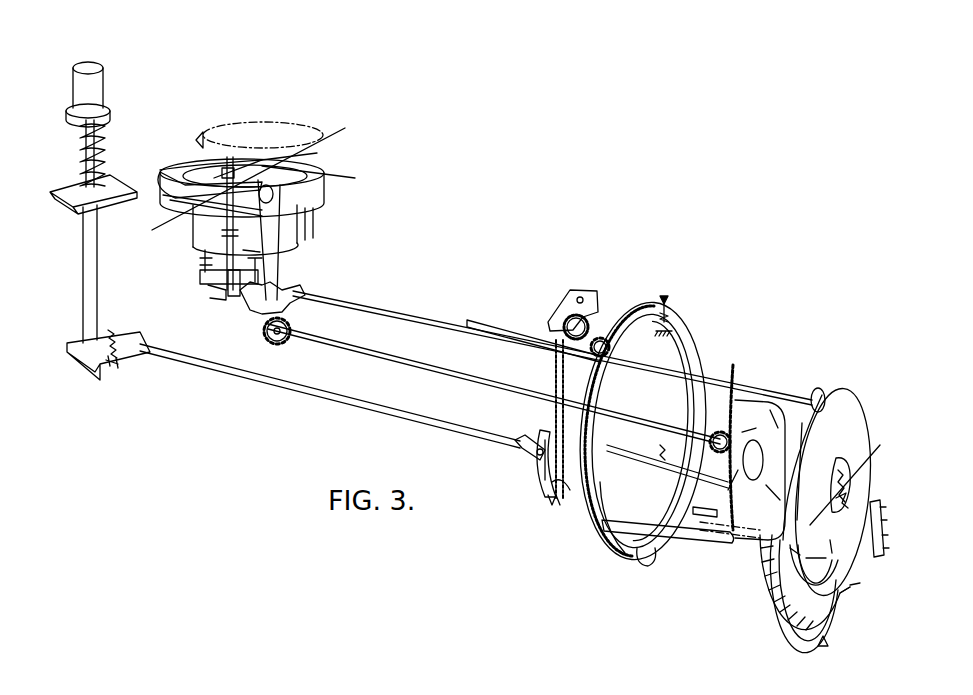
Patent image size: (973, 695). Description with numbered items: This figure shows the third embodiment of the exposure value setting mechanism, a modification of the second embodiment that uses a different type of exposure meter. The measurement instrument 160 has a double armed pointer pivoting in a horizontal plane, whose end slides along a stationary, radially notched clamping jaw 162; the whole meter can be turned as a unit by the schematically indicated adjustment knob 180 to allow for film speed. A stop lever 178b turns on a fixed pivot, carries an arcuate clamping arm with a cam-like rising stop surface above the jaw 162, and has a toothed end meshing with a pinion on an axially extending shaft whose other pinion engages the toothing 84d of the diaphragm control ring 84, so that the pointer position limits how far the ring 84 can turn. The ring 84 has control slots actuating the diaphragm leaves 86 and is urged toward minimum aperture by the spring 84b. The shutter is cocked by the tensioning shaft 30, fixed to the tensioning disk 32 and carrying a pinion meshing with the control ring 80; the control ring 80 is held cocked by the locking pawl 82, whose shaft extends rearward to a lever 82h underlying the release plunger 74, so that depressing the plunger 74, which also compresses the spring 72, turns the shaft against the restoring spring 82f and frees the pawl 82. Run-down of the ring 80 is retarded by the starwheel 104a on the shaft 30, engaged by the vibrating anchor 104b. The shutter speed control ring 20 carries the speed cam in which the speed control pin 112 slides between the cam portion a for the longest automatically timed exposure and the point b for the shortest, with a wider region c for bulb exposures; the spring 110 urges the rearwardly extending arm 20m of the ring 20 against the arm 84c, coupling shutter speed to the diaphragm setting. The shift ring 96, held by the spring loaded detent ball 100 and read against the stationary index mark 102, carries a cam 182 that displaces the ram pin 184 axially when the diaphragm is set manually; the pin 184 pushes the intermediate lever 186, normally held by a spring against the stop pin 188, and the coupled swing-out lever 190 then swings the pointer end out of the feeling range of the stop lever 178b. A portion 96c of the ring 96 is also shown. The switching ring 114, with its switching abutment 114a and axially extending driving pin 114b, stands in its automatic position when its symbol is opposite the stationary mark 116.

The release plunger 74 is at (104, 82).
The spring 72 is at (80, 150).
The lever 82h is at (132, 358).
The restoring spring 82f is at (100, 340).
The adjustment knob 180 is at (262, 118).
The measurement instrument 160 is at (320, 232).
The stationary clamping jaw 162 is at (168, 204).
The stop lever 178b is at (280, 208).
The swing-out lever 190 is at (222, 232).
The intermediate lever 186 is at (204, 283).
The stop pin 188 is at (215, 300).
The ram pin 184 is at (395, 318).
The tensioning shaft 30 is at (500, 320).
The vibrating pad or anchor 104b is at (583, 291).
The starwheel 104a is at (590, 318).
The spring loaded detent ball 100 is at (675, 318).
The stationary index mark 102 is at (672, 298).
The shift ring 96 is at (603, 560).
The tab 96c is at (645, 566).
The arm 84c is at (688, 545).
The rearwardly extending arm 20m is at (725, 545).
The diaphragm control ring 84 is at (760, 402).
The toothing 84d is at (734, 380).
The spring 84b is at (667, 455).
The diaphragm leaves 86 is at (802, 467).
The cam 182 is at (552, 402).
The locking pawl 82 is at (520, 446).
The control ring 80 is at (562, 510).
The shutter speed control cam ring 20 is at (858, 427).
The tensioning disk 32 is at (824, 390).
The switching ring 114 is at (858, 590).
The switching shoulder 114a is at (850, 600).
The driving pin 114b is at (846, 574).
The bulb cam region c is at (862, 583).
The stationary mark 116 is at (830, 644).
The shutter speed control pin 112 is at (850, 478).
The spring 110 is at (850, 498).
The cam point b is at (853, 475).
The cam portion a is at (812, 549).